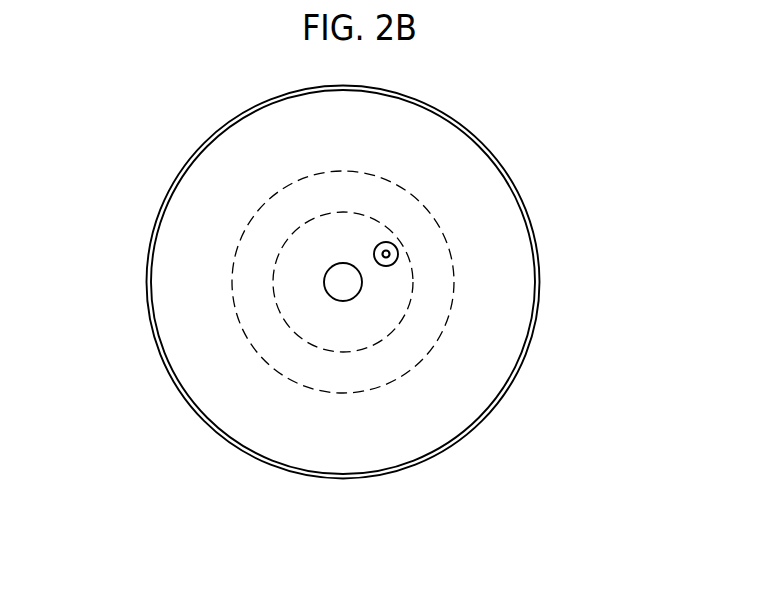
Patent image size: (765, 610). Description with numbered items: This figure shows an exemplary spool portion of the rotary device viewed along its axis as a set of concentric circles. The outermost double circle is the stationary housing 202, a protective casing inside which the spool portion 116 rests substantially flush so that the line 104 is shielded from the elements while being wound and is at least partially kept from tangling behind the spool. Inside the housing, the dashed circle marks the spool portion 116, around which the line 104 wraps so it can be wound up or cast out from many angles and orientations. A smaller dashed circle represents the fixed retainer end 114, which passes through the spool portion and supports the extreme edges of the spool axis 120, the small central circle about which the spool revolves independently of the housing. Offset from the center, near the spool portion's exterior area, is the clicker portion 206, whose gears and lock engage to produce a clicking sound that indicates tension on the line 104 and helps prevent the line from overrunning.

The line 104 is at (555, 0).
The stationary housing 202 is at (212, 133).
The spool portion 116 is at (240, 243).
The fixed retainer end 114 is at (273, 293).
The spool axis 120 is at (343, 282).
The clicker portion 206 is at (398, 246).